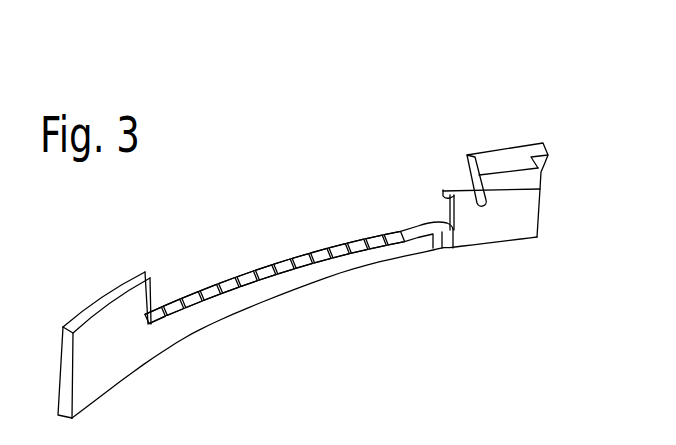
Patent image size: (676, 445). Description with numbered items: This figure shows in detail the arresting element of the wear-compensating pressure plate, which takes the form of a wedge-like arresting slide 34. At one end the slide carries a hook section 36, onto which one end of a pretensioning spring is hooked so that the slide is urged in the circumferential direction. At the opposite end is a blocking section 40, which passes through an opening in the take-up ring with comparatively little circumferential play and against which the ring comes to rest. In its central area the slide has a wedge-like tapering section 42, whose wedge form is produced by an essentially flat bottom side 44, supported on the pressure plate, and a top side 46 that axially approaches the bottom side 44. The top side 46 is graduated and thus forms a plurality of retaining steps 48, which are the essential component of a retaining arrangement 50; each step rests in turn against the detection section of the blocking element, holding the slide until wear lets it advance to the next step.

The arresting slide 34 is at (113, 322).
The hook section 36 is at (443, 192).
The blocking section 40 is at (502, 167).
The wedge-like tapering section 42 is at (273, 292).
The bottom side 44 is at (235, 318).
The top side 46 is at (263, 260).
The retaining steps 48 is at (207, 287).
The retaining arrangement 50 is at (168, 299).